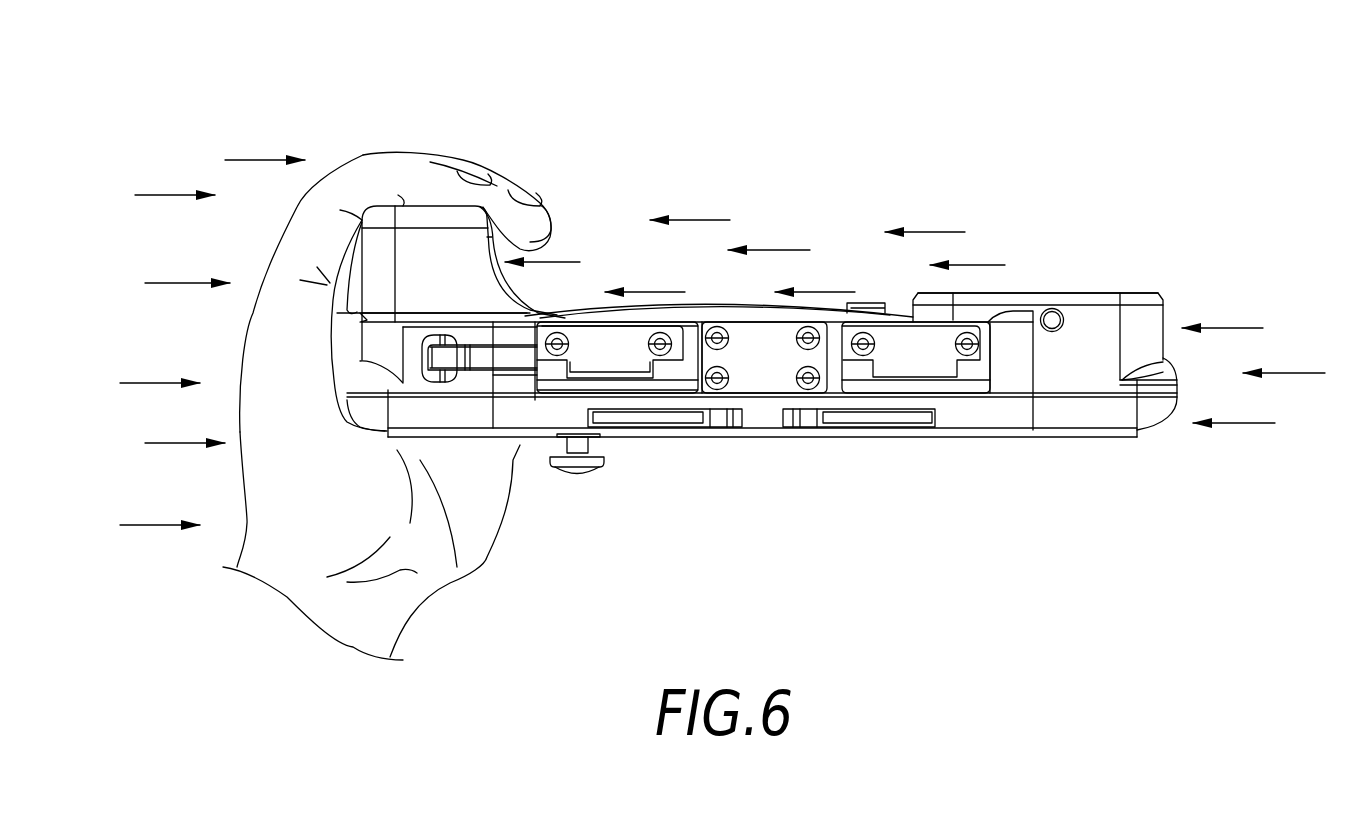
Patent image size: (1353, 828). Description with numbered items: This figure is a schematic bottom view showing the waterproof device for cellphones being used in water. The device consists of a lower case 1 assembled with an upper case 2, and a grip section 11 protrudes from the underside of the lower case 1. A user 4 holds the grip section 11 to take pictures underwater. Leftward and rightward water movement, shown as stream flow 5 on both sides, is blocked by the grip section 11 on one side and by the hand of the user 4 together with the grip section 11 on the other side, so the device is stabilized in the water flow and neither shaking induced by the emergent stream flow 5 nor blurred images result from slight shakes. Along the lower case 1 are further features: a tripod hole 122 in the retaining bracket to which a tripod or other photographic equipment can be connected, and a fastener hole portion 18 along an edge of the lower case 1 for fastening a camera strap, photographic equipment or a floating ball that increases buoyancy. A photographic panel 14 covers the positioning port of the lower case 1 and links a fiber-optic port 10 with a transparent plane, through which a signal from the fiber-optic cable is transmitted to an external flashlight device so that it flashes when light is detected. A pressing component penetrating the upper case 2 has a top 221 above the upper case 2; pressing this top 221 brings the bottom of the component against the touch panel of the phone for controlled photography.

The lower case 1 is at (1165, 322).
The upper case 2 is at (834, 438).
The user 4 is at (393, 150).
The stream flow 5 is at (173, 195).
The fiber-optic port 10 is at (1060, 328).
The grip section 11 is at (431, 252).
The photographic panel 14 is at (1070, 293).
The fastener hole portion 18 is at (452, 358).
The tripod hole 122 is at (713, 384).
The top 221 is at (575, 472).